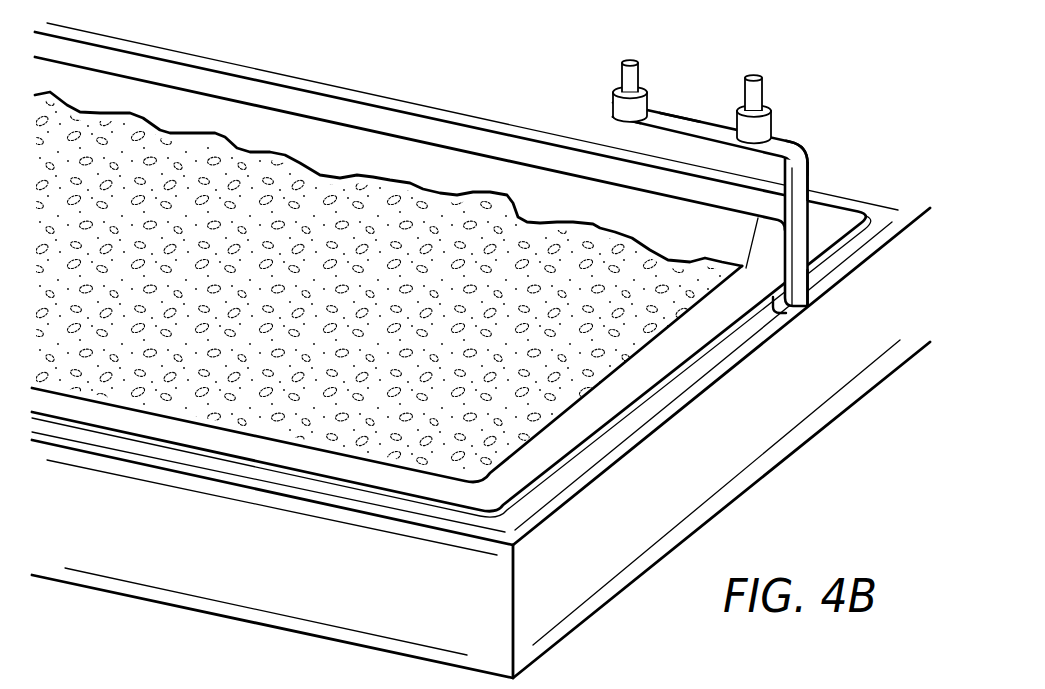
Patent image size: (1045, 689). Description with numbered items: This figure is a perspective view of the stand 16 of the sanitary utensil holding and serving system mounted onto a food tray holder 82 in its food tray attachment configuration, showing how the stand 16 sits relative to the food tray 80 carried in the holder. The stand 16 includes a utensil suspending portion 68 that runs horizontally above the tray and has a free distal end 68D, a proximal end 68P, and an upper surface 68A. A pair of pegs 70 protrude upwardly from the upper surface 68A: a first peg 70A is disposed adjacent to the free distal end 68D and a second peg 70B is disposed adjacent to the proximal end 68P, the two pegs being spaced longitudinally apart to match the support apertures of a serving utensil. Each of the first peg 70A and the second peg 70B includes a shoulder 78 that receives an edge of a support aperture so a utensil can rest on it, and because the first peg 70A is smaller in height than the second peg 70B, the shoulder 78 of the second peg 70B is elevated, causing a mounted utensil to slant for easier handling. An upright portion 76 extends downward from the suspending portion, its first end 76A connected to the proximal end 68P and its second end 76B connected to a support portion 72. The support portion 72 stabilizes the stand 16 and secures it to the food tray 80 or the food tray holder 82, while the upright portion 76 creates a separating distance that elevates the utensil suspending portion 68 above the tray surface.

The stand 16 is at (718, 202).
The utensil suspending portion 68 is at (693, 107).
The upper surface 68A is at (677, 118).
The free distal end 68D is at (616, 118).
The proximal end 68P is at (803, 150).
The pair of pegs 70 is at (686, 70).
The first peg 70A is at (600, 72).
The second peg 70B is at (777, 81).
The shoulder 78 is at (664, 86).
The upright portion 76 is at (863, 240).
The first end 76A is at (808, 166).
The second end 76B is at (798, 288).
The support portion 72 is at (777, 312).
The food tray 80 is at (675, 357).
The food tray holder 82 is at (777, 418).